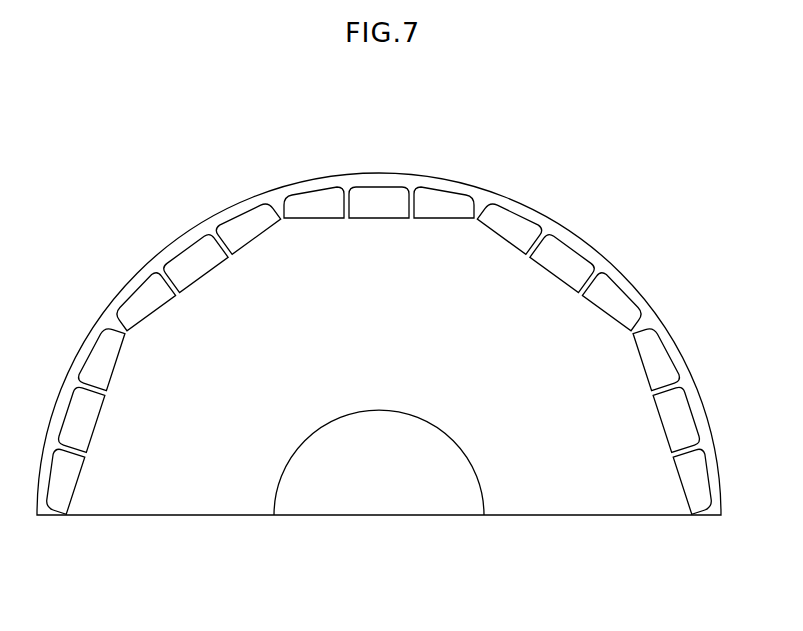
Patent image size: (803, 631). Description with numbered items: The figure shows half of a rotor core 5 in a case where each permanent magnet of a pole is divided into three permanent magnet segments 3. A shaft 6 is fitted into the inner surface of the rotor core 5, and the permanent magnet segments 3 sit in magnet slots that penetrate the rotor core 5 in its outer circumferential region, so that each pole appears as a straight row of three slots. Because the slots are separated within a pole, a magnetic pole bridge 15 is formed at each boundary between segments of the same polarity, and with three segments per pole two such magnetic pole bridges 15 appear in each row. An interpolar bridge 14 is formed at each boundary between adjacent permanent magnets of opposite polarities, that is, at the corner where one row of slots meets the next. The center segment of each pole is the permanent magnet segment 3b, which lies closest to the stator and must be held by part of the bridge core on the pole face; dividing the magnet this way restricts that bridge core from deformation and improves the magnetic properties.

The permanent magnet segment 3 is at (318, 205).
The permanent magnet segment 3b is at (379, 193).
The rotor core 5 is at (543, 482).
The shaft 6 is at (417, 492).
The interpolar bridge 14 is at (484, 207).
The magnetic pole bridge 15 is at (603, 265).